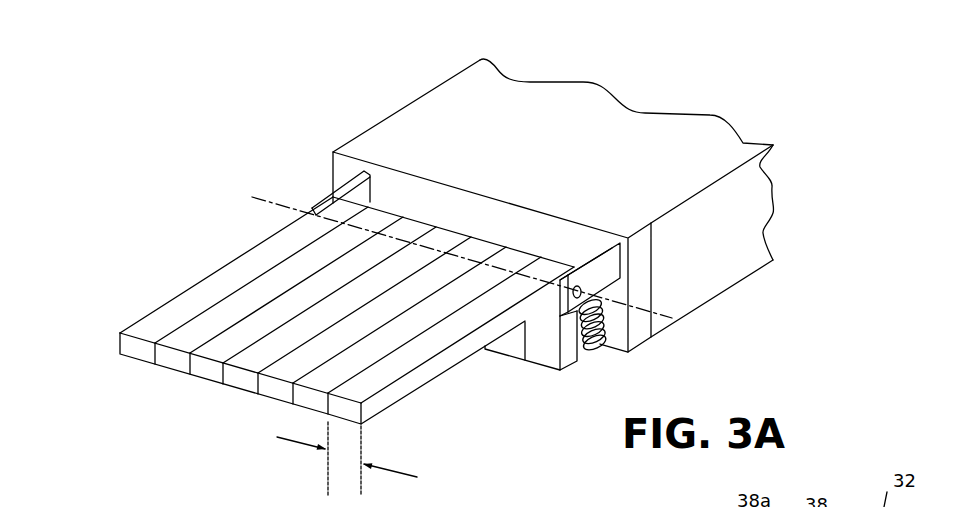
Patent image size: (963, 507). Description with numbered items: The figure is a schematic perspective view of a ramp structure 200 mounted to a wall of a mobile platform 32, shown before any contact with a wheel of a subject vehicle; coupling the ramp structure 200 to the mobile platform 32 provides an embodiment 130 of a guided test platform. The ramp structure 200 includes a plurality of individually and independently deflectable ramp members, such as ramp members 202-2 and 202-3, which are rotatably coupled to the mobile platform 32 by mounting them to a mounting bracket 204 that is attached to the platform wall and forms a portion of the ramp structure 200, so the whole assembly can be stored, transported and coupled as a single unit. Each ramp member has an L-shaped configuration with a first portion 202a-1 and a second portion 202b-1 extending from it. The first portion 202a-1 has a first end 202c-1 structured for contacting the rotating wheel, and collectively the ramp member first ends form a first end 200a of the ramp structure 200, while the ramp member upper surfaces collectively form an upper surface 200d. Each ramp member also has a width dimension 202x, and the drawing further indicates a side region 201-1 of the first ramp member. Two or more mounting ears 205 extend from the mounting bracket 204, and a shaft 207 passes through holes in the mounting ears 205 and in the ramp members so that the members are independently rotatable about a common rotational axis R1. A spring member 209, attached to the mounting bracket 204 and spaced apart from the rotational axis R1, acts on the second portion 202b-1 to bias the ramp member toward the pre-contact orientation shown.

The guided test platform 130 is at (445, 76).
The mobile platform 32 is at (391, 113).
The mounting bracket 204 is at (371, 154).
The mounting ear 205 is at (330, 176).
The shaft 207 is at (578, 287).
The spring member 209 is at (600, 330).
The ramp structure 200 is at (150, 297).
The upper surface of the ramp structure 200d is at (237, 304).
The first end of the ramp structure 200a is at (127, 374).
The ramp member 202-3 is at (300, 356).
The ramp member 202-2 is at (323, 377).
The first end 202c-1 is at (339, 406).
The width dimension 202x is at (388, 463).
The side face of first fin 201-1 is at (439, 376).
The first portion 202a-1 is at (452, 358).
The second portion 202b-1 is at (545, 345).
The rotational axis R1 is at (668, 317).